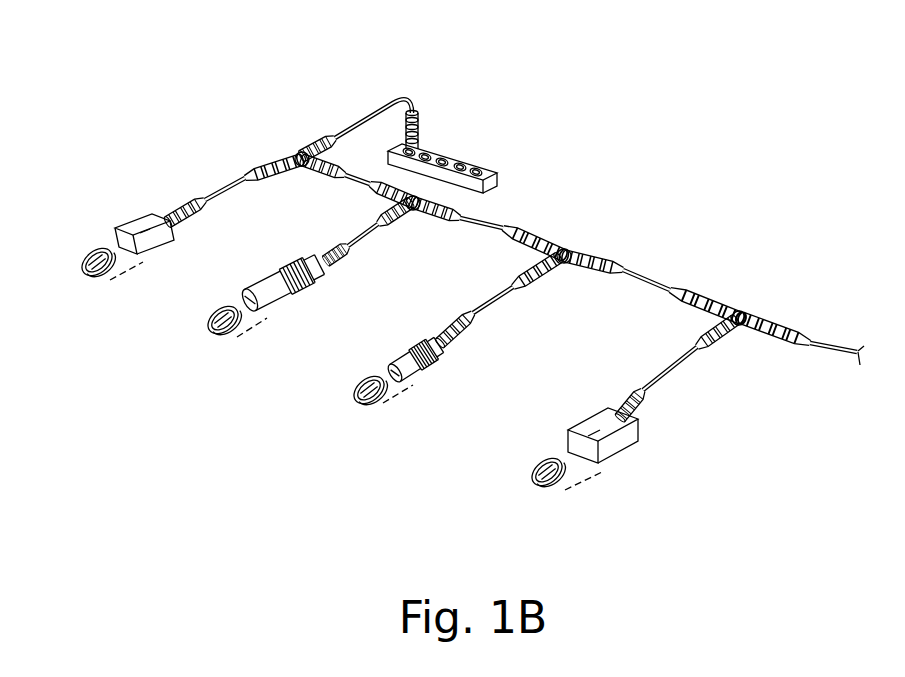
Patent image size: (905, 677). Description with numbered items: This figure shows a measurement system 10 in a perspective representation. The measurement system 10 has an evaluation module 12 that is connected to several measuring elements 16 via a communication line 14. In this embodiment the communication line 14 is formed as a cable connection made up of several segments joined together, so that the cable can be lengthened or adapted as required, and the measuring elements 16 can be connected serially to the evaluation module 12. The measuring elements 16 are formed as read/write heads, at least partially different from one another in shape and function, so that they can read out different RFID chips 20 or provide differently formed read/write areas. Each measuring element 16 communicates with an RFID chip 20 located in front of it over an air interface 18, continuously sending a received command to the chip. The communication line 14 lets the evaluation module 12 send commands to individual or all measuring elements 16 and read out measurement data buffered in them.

The measurement system 10 is at (693, 112).
The evaluation module 12 is at (470, 152).
The communication line 14 is at (350, 128).
The measuring element 16 is at (160, 250).
The air interface 18 is at (356, 385).
The RFID chip 20 is at (87, 265).